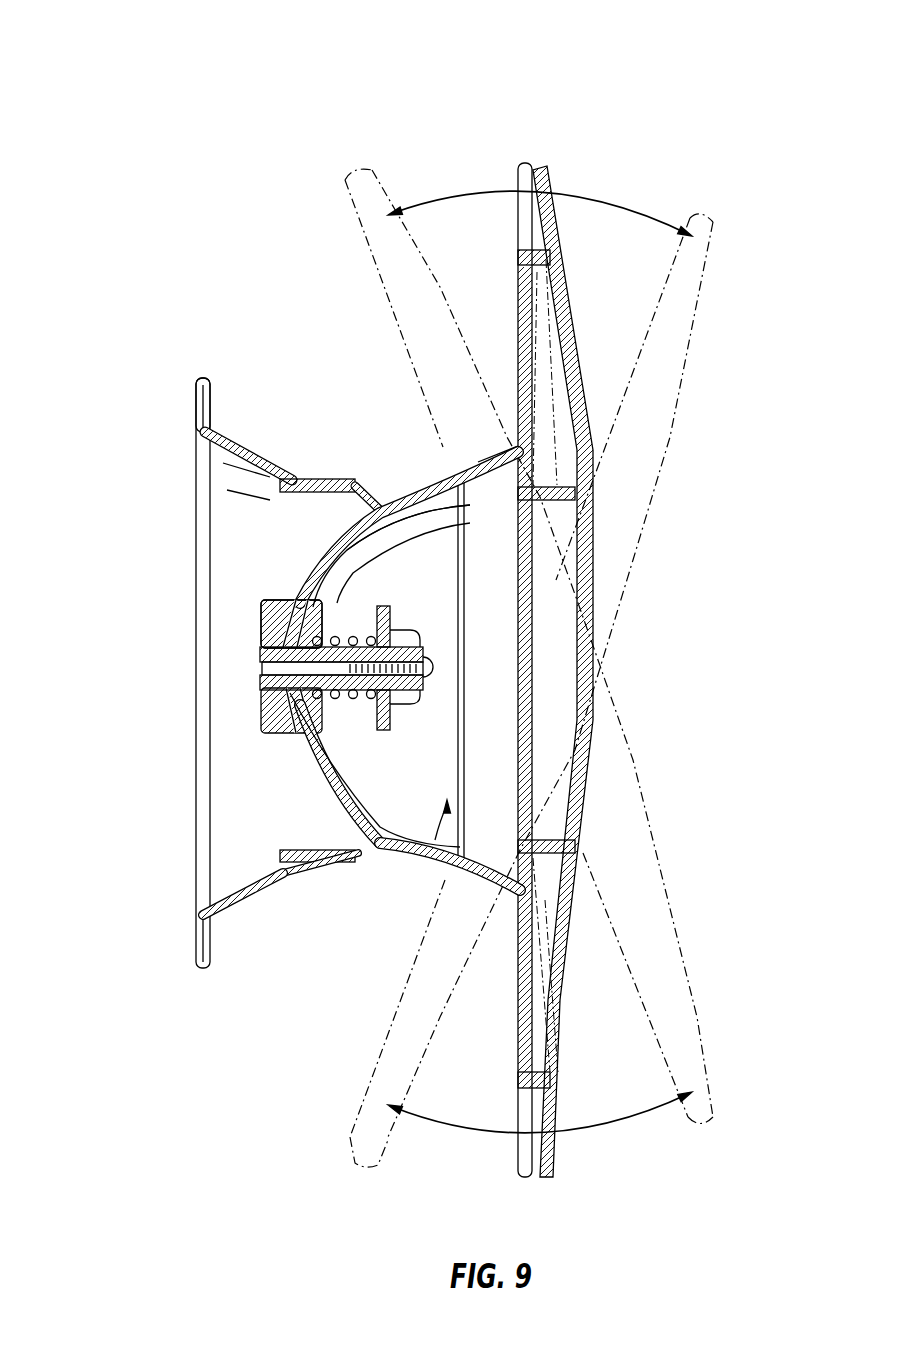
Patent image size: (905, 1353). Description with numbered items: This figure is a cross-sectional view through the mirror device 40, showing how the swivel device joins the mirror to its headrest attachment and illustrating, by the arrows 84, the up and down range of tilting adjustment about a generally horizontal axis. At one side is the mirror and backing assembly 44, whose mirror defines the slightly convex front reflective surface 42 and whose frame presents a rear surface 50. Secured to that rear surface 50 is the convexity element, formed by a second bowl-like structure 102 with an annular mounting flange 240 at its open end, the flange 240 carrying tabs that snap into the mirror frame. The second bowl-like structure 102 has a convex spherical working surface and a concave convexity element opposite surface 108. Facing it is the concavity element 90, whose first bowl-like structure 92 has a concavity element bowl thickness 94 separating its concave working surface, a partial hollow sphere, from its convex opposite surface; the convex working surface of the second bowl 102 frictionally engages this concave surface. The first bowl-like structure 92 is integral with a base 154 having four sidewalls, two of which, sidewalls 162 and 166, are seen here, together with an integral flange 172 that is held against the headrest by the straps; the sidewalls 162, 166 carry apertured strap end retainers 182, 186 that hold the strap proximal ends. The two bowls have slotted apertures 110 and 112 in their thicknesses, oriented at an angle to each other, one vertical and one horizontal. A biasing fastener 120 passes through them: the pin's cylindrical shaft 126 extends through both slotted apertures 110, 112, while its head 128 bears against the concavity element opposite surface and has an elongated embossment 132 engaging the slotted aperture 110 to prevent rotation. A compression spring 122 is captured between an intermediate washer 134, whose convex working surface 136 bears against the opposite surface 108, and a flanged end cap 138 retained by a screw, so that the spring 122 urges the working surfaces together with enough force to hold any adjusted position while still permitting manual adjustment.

The mirror device 40 is at (706, 91).
The front reflective surface 42 is at (593, 750).
The mirror and backing assembly 44 is at (516, 124).
The rear surface 50 is at (517, 323).
The arrows 84 is at (592, 182).
The concavity element 90 is at (243, 358).
The first bowl-like structure 92 is at (333, 522).
The concavity element bowl thickness 94 is at (322, 545).
The second bowl-like structure 102 is at (415, 518).
The convexity element opposite surface 108 is at (350, 806).
The slotted aperture 110 is at (335, 796).
The slotted aperture 112 is at (262, 693).
The biasing fastener 120 is at (445, 889).
The spring 122 is at (353, 647).
The cylindrical shaft 126 is at (343, 693).
The head 128 is at (260, 647).
The elongated embossment 132 is at (293, 598).
The convex working surface 136 is at (292, 602).
The intermediate washer 134 is at (340, 537).
The flanged end cap 138 is at (415, 697).
The base 154 is at (233, 918).
The sidewall 162 is at (253, 450).
The sidewall 166 is at (275, 887).
The flange 172 is at (195, 388).
The apertured strap end retainer 182 is at (338, 480).
The apertured strap end retainer 186 is at (280, 861).
The annular mounting flange 240 is at (515, 452).